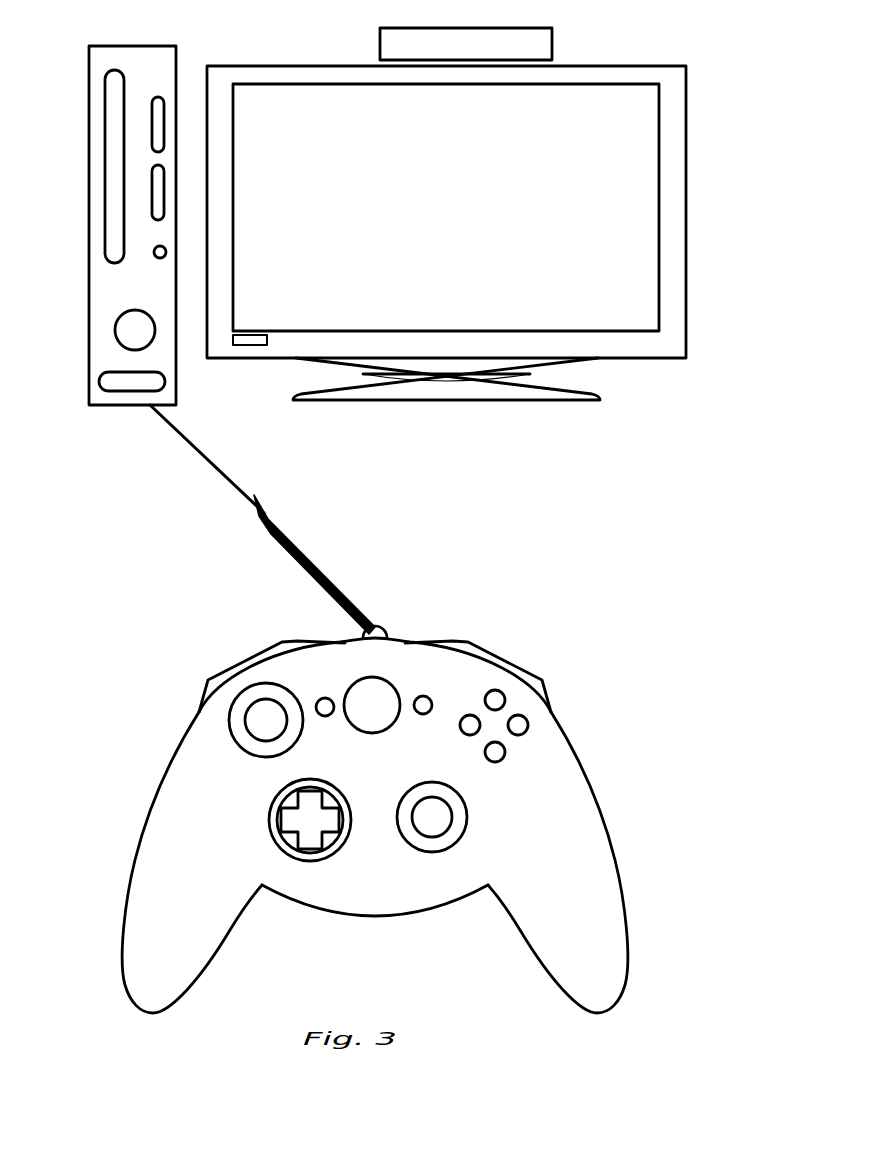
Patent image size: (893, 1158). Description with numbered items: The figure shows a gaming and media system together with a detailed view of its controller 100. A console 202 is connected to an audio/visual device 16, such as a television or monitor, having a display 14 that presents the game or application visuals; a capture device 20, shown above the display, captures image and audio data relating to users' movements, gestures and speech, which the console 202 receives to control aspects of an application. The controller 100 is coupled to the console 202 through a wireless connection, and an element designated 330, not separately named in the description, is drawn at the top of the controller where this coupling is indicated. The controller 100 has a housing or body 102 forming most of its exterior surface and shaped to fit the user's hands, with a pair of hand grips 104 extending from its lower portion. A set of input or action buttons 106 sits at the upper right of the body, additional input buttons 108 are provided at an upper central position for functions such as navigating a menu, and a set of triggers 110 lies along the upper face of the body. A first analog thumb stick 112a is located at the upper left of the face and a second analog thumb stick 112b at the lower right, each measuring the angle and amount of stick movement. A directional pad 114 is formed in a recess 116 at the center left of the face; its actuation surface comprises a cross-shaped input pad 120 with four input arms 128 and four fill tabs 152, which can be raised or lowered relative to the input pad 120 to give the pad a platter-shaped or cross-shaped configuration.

The display 14 is at (625, 179).
The audio/visual device 16 is at (476, 209).
The capture device 20 is at (380, 38).
The console 202 is at (105, 279).
The wireless communication link 330 is at (350, 630).
The controller 100 is at (697, 670).
The housing or body 102 is at (376, 825).
The hand grips 104 is at (122, 958).
The input or action buttons 106 is at (505, 698).
The additional input buttons 108 is at (318, 698).
The triggers 110 is at (248, 652).
The first analog thumb stick 112a is at (229, 733).
The second analog thumb stick 112b is at (468, 817).
The directional pad 114 is at (295, 842).
The recess 116 is at (272, 835).
The cross-shaped input pad 120 is at (327, 800).
The input arms 128 is at (310, 793).
The fill tabs 152 is at (292, 802).